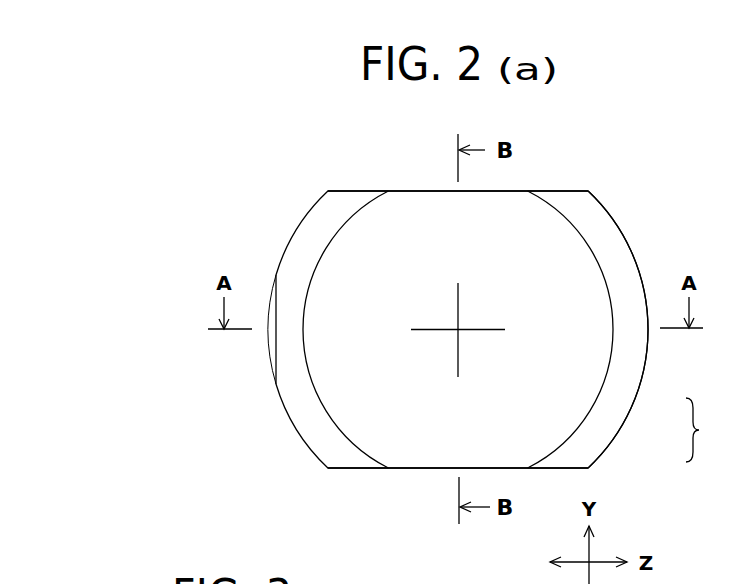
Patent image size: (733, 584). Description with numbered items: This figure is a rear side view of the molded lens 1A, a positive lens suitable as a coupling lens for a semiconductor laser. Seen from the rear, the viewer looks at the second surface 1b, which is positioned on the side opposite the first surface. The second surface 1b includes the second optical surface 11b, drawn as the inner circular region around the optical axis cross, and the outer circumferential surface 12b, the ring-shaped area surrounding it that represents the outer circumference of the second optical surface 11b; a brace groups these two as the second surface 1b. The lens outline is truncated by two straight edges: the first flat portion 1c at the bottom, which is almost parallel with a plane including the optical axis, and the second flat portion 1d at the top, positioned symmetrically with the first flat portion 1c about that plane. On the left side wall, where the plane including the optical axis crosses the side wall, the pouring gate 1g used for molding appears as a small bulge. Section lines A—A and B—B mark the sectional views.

The molded lens 1A is at (546, 177).
The second flat portion 1d is at (413, 191).
The first flat portion 1c is at (405, 468).
The pouring gate 1g is at (272, 355).
The second optical surface 11b is at (555, 422).
The outer circumferential surface 12b is at (607, 405).
The second surface 1b is at (709, 430).